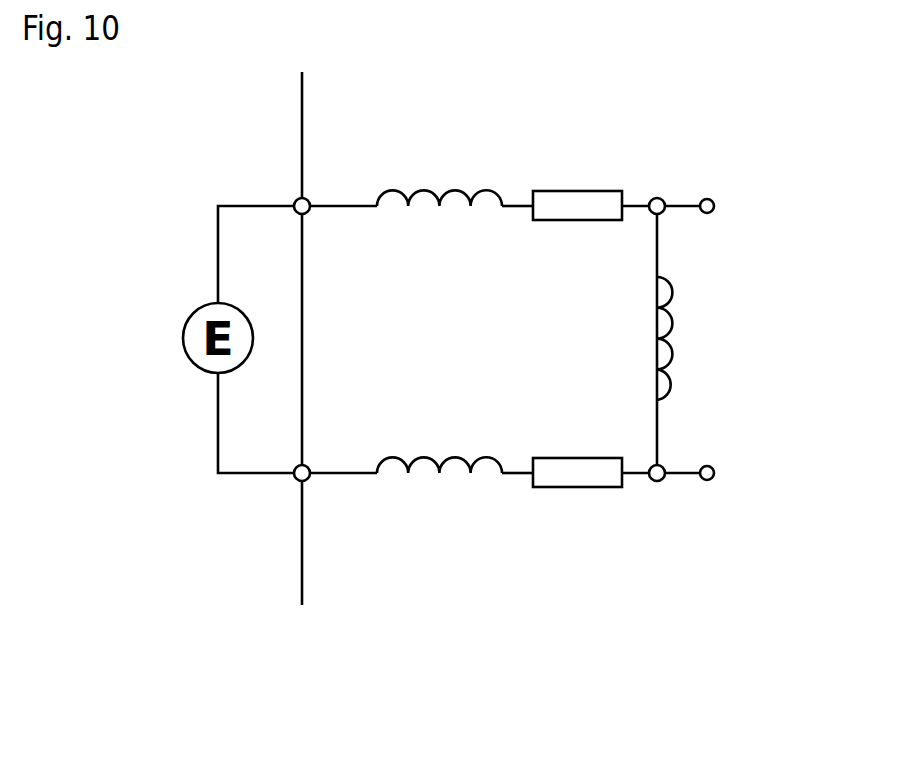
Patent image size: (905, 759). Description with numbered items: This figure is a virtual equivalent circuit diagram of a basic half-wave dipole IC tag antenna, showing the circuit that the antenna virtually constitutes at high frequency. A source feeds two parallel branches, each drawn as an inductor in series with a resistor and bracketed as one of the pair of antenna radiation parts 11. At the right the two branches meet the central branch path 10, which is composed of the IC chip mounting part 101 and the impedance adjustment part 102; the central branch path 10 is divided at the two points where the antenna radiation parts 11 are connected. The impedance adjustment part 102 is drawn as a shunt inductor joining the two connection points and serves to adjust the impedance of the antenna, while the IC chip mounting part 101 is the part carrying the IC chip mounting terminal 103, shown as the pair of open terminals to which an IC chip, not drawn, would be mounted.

The central branch path 10 is at (559, 392).
The antenna radiation parts 11 is at (357, 179).
The IC chip mounting part 101 is at (659, 179).
The impedance adjustment part 102 is at (650, 208).
The IC chip mounting terminal 103 is at (715, 208).